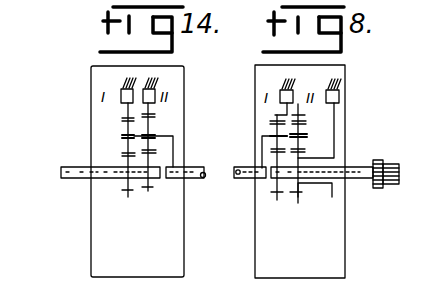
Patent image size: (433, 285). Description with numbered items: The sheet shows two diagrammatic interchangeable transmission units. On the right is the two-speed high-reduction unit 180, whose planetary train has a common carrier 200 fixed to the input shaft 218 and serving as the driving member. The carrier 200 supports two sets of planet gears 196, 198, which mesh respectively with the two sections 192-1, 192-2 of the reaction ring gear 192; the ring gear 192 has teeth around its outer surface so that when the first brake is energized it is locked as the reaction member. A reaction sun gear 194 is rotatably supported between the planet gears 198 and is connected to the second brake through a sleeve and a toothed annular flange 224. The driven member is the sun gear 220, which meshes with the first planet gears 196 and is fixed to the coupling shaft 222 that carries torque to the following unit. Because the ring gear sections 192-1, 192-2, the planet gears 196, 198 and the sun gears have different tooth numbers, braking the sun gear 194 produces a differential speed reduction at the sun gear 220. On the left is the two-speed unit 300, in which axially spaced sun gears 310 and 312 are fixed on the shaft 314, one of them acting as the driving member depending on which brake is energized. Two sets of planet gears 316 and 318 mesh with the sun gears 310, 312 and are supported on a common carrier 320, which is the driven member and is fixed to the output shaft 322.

In FIG. 14, the two-speed unit 300 is at (88, 126).
In FIG. 14, the sun gear 310 is at (128, 197).
In FIG. 14, the sun gear 312 is at (148, 192).
In FIG. 14, the shaft 314 is at (77, 178).
In FIG. 14, the planet gears 316 is at (128, 143).
In FIG. 14, the planet gears 318 is at (150, 127).
In FIG. 14, the carrier 320 is at (173, 136).
In FIG. 14, the output shaft 322 is at (200, 179).
In FIG. 8, the two-speed unit 180 is at (352, 247).
In FIG. 8, the ring gear 192 is at (298, 115).
In FIG. 8, the ring gear section 192-1 is at (274, 117).
In FIG. 8, the ring gear section 192-2 is at (299, 115).
In FIG. 8, the sun gear 194 is at (297, 197).
In FIG. 8, the planet gears 196 is at (272, 127).
In FIG. 8, the planet gears 198 is at (300, 143).
In FIG. 8, the carrier 200 is at (262, 156).
In FIG. 8, the input shaft 218 is at (249, 179).
In FIG. 8, the sun gear 220 is at (278, 198).
In FIG. 8, the shaft 222 is at (359, 179).
In FIG. 8, the annular ring or flange 224 is at (334, 118).